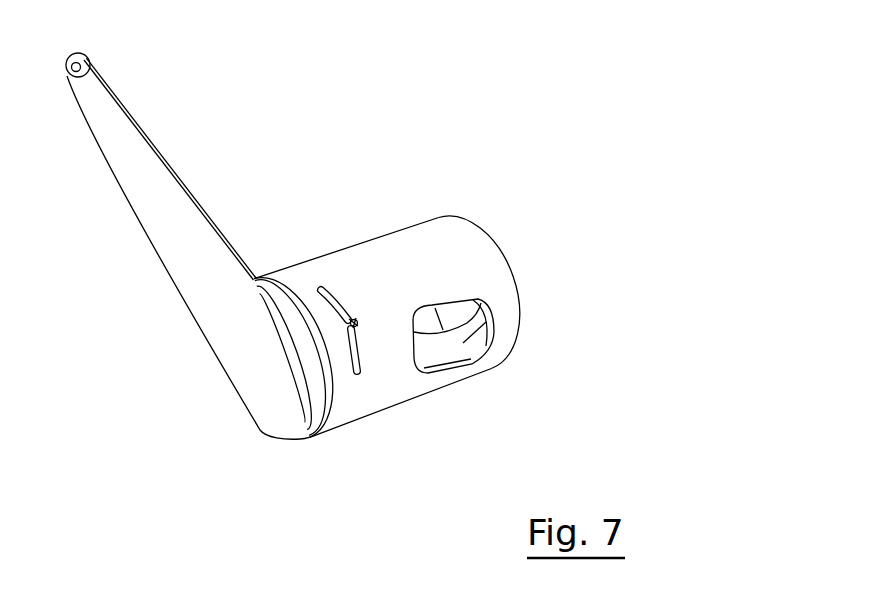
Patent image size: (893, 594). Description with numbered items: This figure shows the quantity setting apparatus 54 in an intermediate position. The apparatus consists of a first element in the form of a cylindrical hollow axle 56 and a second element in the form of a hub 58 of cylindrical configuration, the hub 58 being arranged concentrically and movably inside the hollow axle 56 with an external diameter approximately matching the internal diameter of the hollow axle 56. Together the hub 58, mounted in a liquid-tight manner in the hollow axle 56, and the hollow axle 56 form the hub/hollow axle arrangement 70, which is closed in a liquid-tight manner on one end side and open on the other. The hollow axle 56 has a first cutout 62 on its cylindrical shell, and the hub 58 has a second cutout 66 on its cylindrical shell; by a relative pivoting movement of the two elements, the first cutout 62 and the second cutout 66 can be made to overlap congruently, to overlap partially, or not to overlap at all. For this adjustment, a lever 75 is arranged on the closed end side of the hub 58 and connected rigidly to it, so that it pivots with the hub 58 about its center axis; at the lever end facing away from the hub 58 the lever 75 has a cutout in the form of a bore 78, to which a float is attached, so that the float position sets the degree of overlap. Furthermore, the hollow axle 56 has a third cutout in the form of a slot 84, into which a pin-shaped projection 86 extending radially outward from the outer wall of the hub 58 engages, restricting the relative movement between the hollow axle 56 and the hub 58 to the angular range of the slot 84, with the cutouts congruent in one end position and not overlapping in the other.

The quantity setting apparatus 54 is at (502, 296).
The hollow axle 56 is at (505, 347).
The hub 58 is at (525, 277).
The first cutout 62 is at (455, 358).
The second cutout 66 is at (455, 305).
The hub/hollow axle arrangement 70 is at (595, 292).
The lever 75 is at (170, 222).
The bore 78 is at (78, 67).
The slot 84 is at (319, 286).
The pin-shaped projection 86 is at (356, 326).